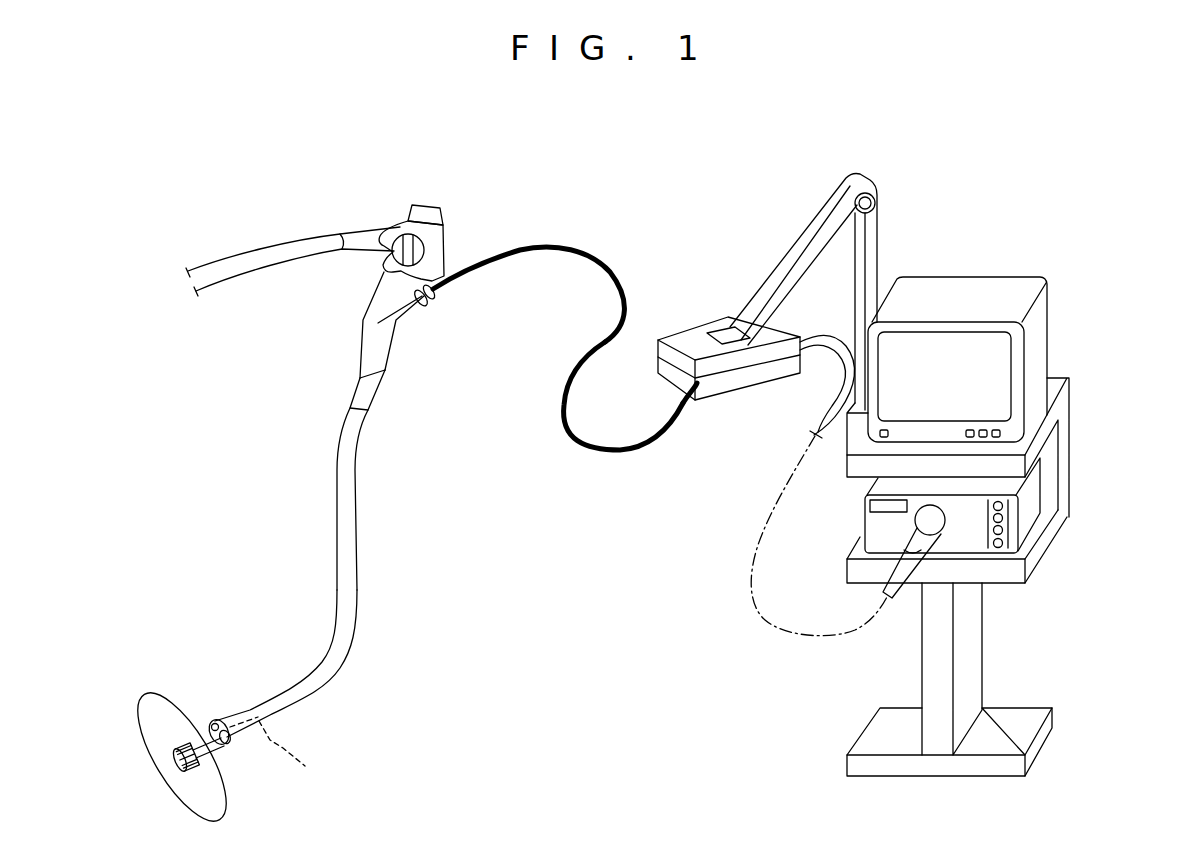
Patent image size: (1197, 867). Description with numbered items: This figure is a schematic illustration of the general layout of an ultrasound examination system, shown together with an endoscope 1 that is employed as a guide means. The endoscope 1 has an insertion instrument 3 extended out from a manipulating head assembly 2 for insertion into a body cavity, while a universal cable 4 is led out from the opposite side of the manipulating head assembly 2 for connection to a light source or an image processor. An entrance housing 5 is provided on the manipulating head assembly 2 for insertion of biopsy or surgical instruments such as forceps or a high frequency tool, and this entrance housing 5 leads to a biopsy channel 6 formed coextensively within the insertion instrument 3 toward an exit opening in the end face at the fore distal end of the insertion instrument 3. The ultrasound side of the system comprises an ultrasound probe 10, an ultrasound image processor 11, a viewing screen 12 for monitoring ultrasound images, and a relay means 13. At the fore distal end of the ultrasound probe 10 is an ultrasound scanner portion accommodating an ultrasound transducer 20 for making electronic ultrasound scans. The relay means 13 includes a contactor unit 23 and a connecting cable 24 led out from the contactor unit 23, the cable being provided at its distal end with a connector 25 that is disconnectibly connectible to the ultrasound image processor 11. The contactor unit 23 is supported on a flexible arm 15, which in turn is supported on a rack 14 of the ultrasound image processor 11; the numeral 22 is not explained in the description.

The endoscope 1 is at (335, 520).
The manipulating head assembly 2 is at (380, 327).
The insertion instrument 3 is at (333, 672).
The universal cable 4 is at (258, 247).
The entrance housing 5 is at (410, 328).
The biopsy channel 6 is at (271, 757).
The ultrasound probe 10 is at (541, 241).
The ultrasound image processor 11 is at (1032, 503).
The viewing screen 12 is at (983, 280).
The relay means 13 is at (688, 326).
The rack 14 is at (1040, 543).
The flexible arm 15 is at (832, 208).
The ultrasound transducer 20 is at (183, 760).
The cable 22 is at (567, 437).
The contactor unit 23 is at (738, 390).
The connecting cable 24 is at (843, 333).
The connector 25 is at (928, 535).